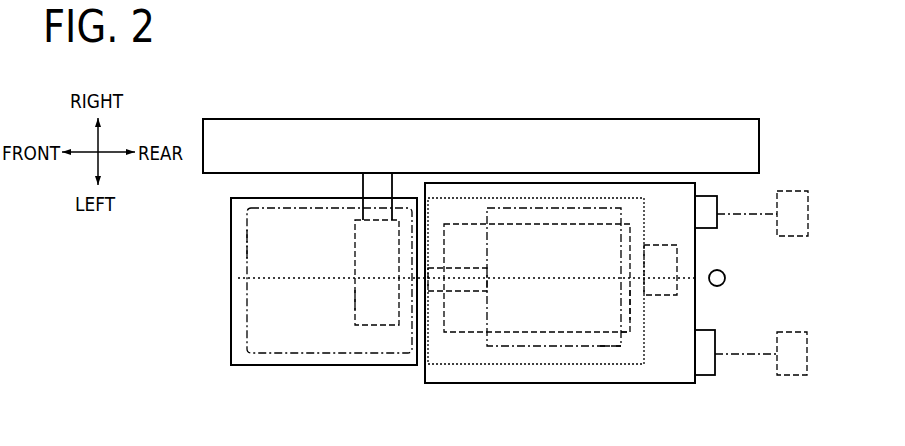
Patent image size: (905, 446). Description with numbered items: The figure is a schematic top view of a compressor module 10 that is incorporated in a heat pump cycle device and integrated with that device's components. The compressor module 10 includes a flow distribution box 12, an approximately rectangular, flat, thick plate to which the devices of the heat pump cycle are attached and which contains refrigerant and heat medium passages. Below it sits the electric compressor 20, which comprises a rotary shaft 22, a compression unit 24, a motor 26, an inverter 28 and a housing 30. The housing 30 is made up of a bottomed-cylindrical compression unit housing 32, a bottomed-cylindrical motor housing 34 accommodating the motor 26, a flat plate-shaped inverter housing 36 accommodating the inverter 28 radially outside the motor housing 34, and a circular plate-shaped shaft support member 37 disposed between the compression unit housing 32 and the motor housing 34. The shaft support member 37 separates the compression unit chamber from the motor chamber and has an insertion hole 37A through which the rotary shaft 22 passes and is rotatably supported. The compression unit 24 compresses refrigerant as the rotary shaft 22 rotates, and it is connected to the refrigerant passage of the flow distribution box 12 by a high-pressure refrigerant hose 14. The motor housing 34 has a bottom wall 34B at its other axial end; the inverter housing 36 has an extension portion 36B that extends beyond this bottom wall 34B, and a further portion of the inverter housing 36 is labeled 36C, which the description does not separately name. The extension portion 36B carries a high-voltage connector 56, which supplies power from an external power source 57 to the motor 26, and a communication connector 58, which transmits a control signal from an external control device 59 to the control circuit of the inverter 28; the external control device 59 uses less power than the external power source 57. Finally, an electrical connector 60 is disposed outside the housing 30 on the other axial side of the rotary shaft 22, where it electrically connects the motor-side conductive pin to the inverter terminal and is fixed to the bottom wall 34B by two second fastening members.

The compressor module 10 is at (773, 136).
The flow distribution box 12 is at (750, 160).
The high-pressure refrigerant hose 14 is at (348, 298).
The compressor 20 is at (699, 252).
The rotary shaft 22 is at (462, 292).
The compression unit 24 is at (248, 243).
The motor 26 is at (625, 347).
The inverter 28 is at (633, 308).
The housing 30 is at (226, 282).
The compression unit housing 32 is at (243, 313).
The motor housing 34 is at (463, 366).
The bottom wall 34B is at (628, 346).
The inverter housing 36 is at (433, 357).
The extension portion 36B is at (690, 367).
The wire harness portion 36C is at (697, 292).
The shaft support member 37 is at (420, 202).
The insertion hole 37A is at (432, 277).
The high-voltage connector 56 is at (715, 350).
The external power source 57 is at (800, 340).
The communication connector 58 is at (712, 207).
The external control device 59 is at (802, 197).
The electrical connector 60 is at (728, 272).